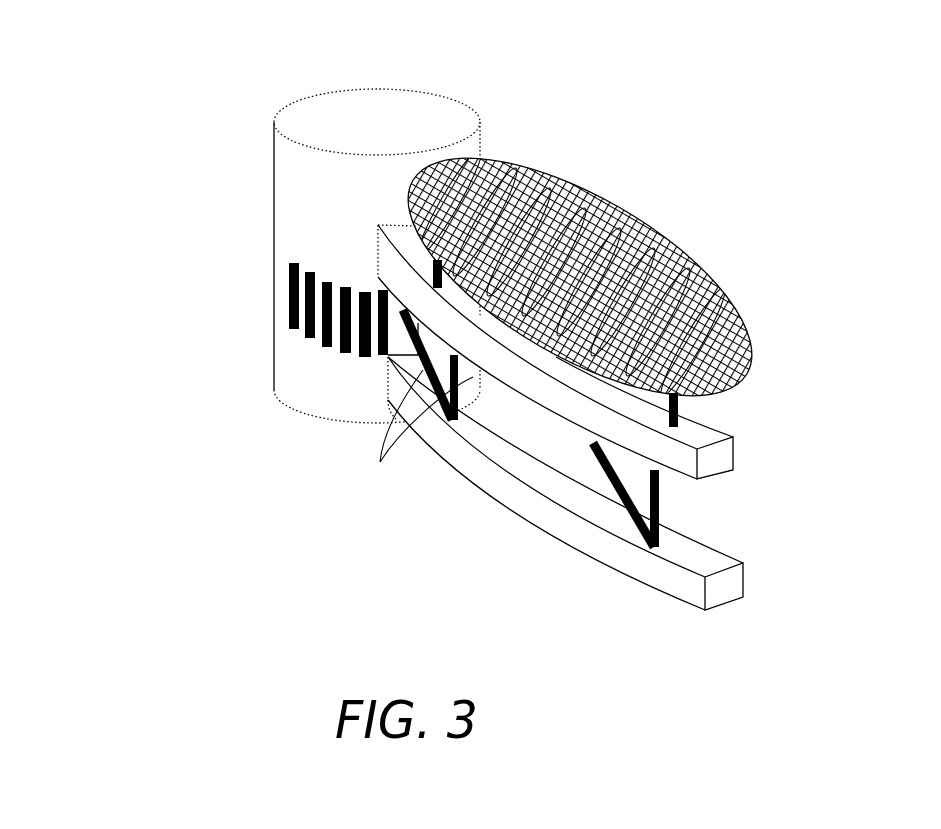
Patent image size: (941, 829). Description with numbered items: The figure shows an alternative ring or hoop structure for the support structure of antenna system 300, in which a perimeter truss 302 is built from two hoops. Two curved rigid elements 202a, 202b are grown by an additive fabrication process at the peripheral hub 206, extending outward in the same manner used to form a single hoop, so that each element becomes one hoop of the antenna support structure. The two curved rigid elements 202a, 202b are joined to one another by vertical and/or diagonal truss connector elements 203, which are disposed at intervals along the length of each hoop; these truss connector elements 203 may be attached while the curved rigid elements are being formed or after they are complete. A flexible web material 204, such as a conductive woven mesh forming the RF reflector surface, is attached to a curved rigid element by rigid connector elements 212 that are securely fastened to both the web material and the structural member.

The antenna system 300 is at (214, 110).
The perimeter truss 302 is at (812, 470).
The truss connector elements 203 is at (289, 298).
The flexible web material 204 is at (689, 266).
The peripheral hub 206 is at (288, 391).
The connector elements 212 is at (682, 401).
The curved rigid element 202a is at (583, 412).
The curved rigid element 202b is at (497, 498).